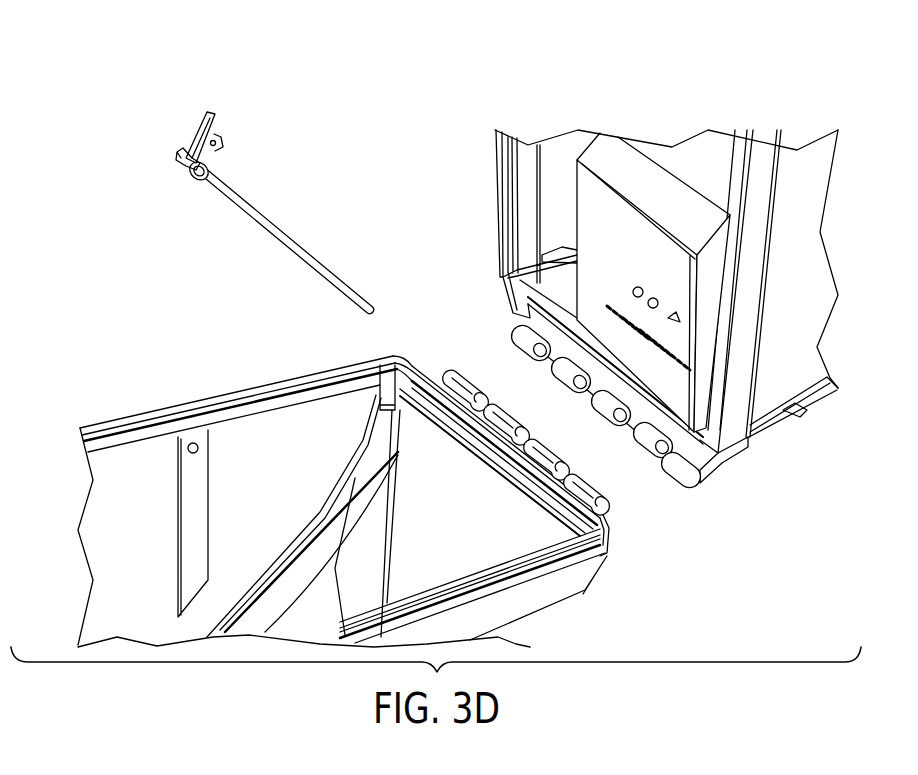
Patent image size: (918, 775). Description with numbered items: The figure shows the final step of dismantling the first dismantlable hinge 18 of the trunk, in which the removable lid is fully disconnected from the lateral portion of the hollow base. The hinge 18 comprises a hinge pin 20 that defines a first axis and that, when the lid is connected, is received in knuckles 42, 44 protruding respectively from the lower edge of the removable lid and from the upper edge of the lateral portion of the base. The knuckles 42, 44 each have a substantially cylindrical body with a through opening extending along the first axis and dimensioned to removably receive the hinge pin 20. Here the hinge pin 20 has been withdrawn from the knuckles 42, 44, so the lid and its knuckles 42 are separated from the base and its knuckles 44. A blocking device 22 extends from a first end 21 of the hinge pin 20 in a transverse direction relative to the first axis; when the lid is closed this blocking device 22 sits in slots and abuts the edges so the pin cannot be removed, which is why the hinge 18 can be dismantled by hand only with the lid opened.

The first dismantlable hinge 18 is at (270, 180).
The hinge pin 20 is at (284, 230).
The first end 21 is at (189, 196).
The blocking device 22 is at (210, 112).
The knuckle 42 is at (662, 462).
The knuckle 44 is at (575, 466).